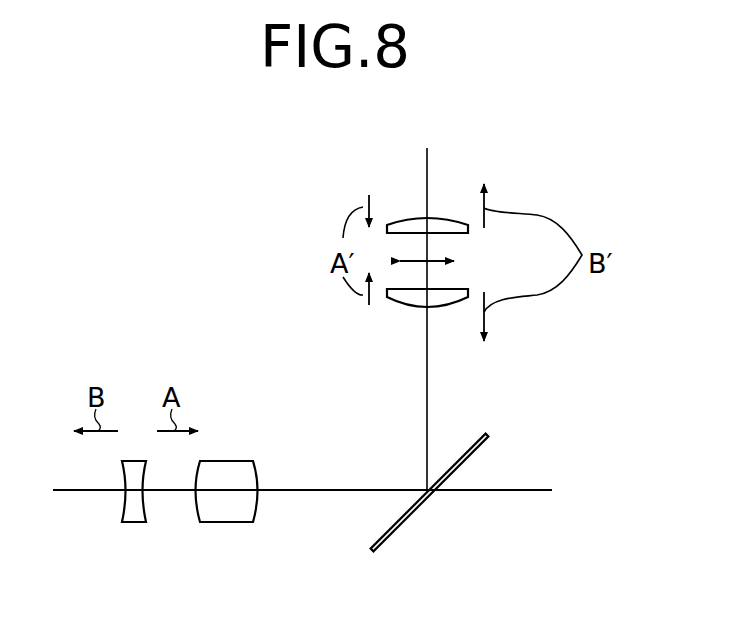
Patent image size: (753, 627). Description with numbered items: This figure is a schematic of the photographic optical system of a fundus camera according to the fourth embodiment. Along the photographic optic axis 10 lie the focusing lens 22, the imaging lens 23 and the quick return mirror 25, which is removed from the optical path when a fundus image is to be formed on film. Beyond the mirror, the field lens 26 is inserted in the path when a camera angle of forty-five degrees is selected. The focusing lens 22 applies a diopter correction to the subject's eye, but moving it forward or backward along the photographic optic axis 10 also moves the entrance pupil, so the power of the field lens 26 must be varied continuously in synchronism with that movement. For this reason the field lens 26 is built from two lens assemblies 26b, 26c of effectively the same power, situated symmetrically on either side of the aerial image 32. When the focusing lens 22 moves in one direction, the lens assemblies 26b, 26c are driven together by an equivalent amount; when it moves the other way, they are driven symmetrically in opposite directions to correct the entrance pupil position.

The photographic optic axis 10 is at (323, 490).
The focusing lens 22 is at (132, 523).
The imaging lens 23 is at (228, 523).
The quick return mirror 25 is at (403, 518).
The field lens 26 is at (222, 225).
The lens assembly 26b is at (402, 307).
The lens assembly 26c is at (402, 217).
The aerial image 32 is at (460, 262).